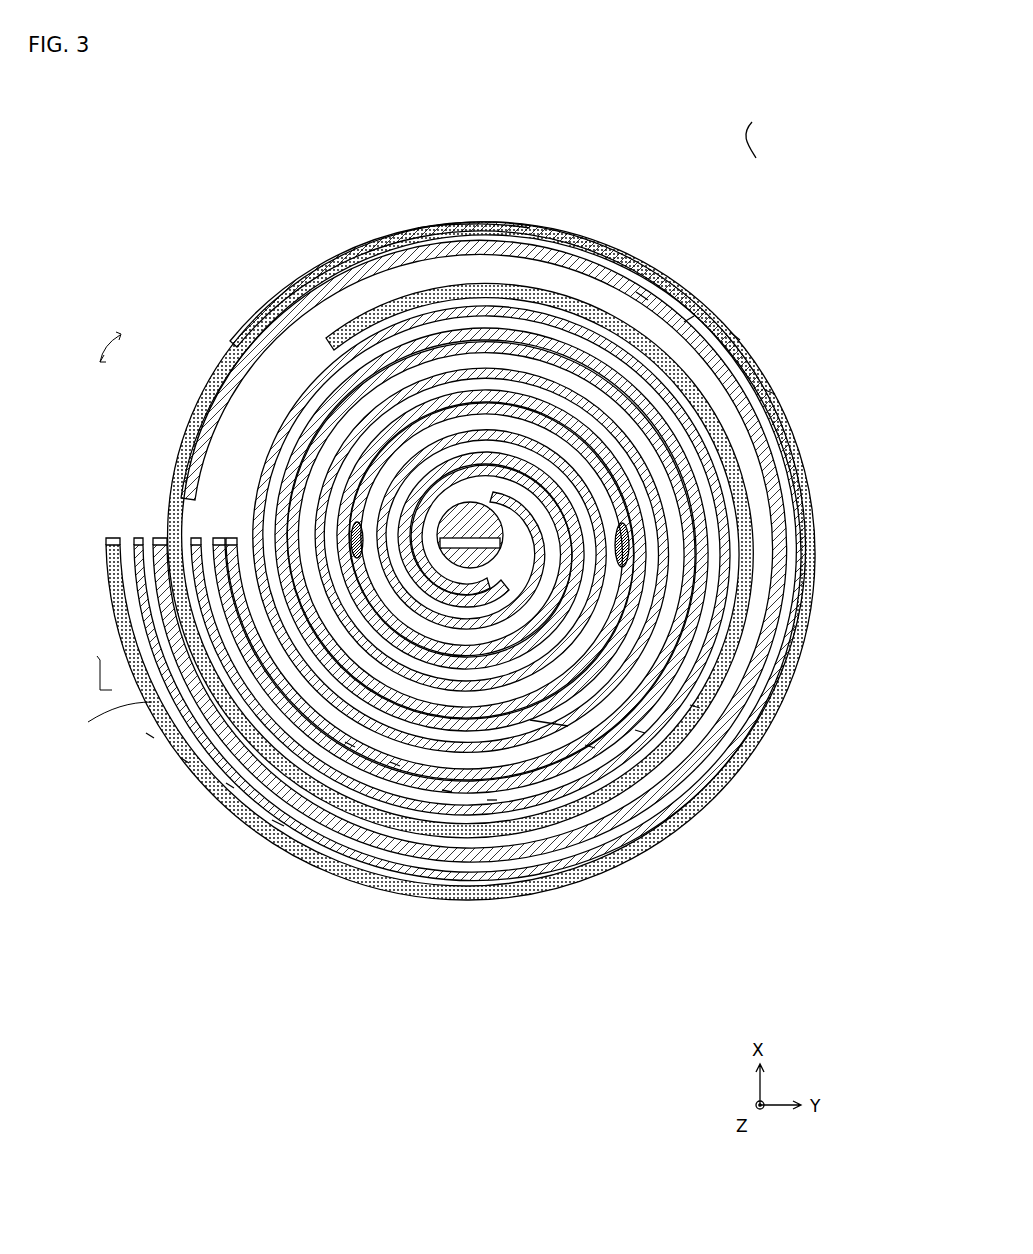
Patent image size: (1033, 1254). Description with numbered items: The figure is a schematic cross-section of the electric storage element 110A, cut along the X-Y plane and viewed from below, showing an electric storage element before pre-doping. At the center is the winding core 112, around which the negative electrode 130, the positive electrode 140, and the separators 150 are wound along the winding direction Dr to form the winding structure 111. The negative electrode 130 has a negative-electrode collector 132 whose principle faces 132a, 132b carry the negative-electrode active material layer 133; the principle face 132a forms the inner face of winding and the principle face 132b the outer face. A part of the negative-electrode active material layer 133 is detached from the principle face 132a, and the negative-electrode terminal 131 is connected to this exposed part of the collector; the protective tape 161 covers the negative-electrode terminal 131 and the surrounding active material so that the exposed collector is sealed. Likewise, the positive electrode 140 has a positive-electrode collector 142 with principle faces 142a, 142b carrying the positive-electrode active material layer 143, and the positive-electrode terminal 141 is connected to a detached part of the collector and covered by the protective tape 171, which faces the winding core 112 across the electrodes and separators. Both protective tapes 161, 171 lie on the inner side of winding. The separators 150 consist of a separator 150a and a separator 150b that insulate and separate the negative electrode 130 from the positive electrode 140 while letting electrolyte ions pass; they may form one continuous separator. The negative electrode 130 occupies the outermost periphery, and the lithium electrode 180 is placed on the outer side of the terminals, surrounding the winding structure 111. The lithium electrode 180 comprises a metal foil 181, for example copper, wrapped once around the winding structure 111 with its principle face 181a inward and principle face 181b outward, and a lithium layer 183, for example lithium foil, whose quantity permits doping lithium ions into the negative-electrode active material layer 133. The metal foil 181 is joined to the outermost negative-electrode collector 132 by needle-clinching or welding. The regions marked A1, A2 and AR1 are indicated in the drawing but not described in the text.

The electric storage element 110A is at (775, 129).
The winding structure 111 is at (470, 597).
The winding core 112 is at (745, 355).
The negative electrode 130 is at (542, 656).
The negative-electrode terminal 131 is at (770, 392).
The negative-electrode collector 132 is at (590, 745).
The principle face of negative-electrode collector 132a is at (695, 705).
The principle face of negative-electrode collector 132b is at (640, 730).
The negative-electrode active material layer 133 is at (572, 835).
The positive electrode 140 is at (502, 639).
The positive-electrode terminal 141 is at (690, 320).
The positive-electrode collector 142 is at (447, 790).
The principle face of positive-electrode collector 142a is at (396, 764).
The principle face of positive-electrode collector 142b is at (350, 745).
The positive-electrode active material layer 143 is at (475, 883).
The separators 150 is at (382, 612).
The separator 150a is at (150, 735).
The separator 150b is at (152, 788).
The protective tape 161 is at (628, 538).
The protective tape 171 is at (640, 295).
The lithium electrode 180 is at (460, 523).
The metal foil 181 is at (272, 300).
The principle face of metal foil 181a is at (498, 232).
The principle face of metal foil 181b is at (448, 230).
The lithium layer 183 is at (348, 266).
The region A1 is at (81, 678).
The region A2 is at (103, 716).
The area AR1 is at (278, 822).
The winding direction Dr is at (100, 345).